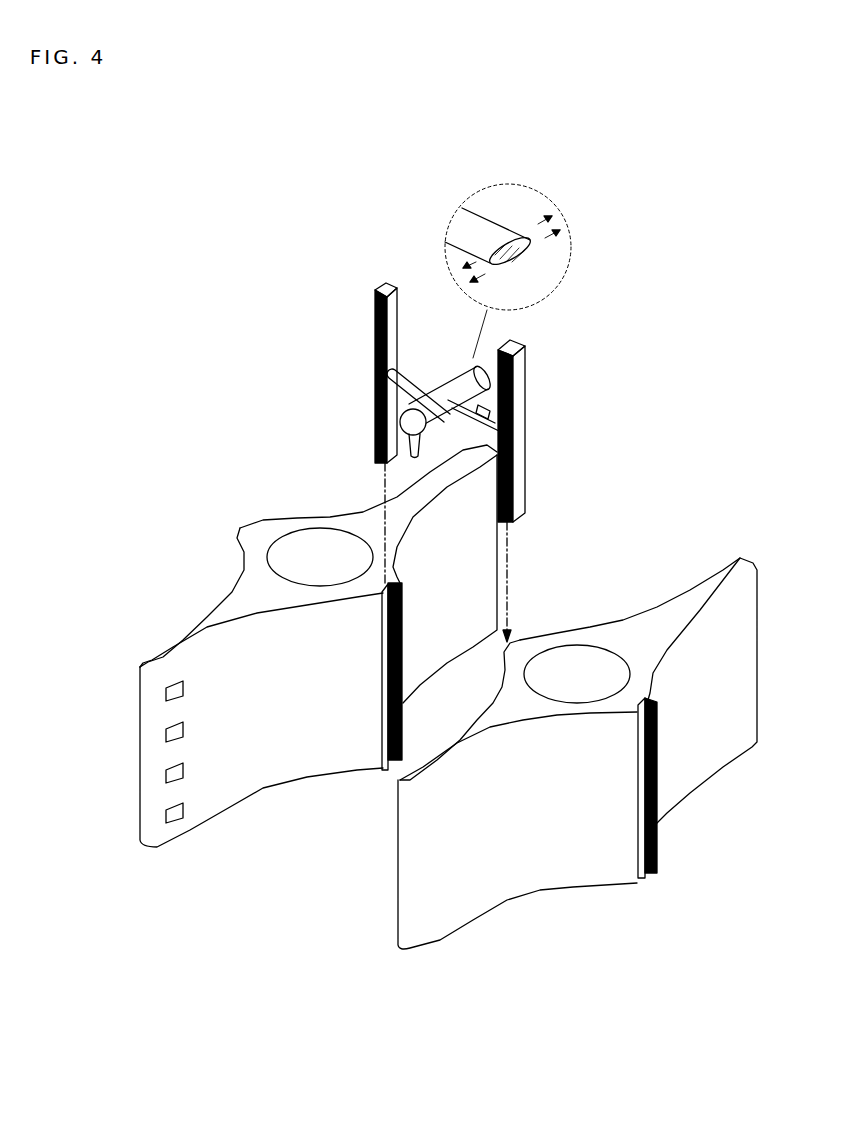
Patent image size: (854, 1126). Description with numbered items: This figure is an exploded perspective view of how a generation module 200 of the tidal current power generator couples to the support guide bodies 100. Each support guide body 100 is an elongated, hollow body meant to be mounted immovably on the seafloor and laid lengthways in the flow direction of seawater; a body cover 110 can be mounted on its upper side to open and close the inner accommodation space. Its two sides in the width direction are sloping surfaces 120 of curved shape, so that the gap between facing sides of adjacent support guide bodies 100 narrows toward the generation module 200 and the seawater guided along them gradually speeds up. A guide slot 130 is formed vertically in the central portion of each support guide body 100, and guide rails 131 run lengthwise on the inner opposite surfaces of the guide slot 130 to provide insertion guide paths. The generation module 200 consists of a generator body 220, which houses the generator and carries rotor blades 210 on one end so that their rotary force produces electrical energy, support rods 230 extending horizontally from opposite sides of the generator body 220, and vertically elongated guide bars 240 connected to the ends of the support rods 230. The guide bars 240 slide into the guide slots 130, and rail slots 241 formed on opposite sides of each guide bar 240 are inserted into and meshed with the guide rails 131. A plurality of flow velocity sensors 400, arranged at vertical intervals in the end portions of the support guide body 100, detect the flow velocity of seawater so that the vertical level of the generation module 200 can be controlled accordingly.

The support guide body 100 is at (173, 655).
The body cover 110 is at (240, 528).
The sloping surface 120 is at (287, 760).
The guide slot 130 is at (383, 590).
The guide rail 131 is at (413, 627).
The generation module 200 is at (535, 424).
The rotor blades 210 is at (384, 420).
The generator body 220 is at (440, 373).
The support rod 230 is at (387, 367).
The guide bar 240 is at (384, 284).
The rail slot 241 is at (388, 283).
The flow velocity sensor 400 is at (165, 826).